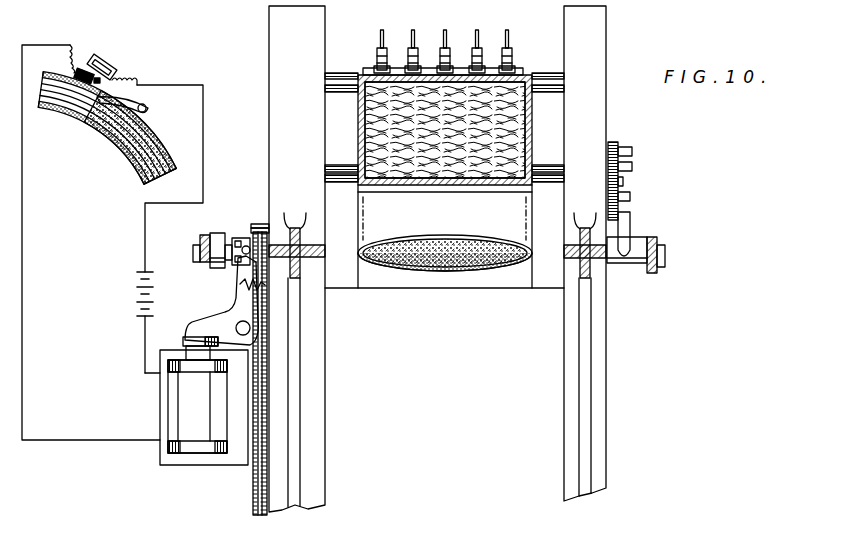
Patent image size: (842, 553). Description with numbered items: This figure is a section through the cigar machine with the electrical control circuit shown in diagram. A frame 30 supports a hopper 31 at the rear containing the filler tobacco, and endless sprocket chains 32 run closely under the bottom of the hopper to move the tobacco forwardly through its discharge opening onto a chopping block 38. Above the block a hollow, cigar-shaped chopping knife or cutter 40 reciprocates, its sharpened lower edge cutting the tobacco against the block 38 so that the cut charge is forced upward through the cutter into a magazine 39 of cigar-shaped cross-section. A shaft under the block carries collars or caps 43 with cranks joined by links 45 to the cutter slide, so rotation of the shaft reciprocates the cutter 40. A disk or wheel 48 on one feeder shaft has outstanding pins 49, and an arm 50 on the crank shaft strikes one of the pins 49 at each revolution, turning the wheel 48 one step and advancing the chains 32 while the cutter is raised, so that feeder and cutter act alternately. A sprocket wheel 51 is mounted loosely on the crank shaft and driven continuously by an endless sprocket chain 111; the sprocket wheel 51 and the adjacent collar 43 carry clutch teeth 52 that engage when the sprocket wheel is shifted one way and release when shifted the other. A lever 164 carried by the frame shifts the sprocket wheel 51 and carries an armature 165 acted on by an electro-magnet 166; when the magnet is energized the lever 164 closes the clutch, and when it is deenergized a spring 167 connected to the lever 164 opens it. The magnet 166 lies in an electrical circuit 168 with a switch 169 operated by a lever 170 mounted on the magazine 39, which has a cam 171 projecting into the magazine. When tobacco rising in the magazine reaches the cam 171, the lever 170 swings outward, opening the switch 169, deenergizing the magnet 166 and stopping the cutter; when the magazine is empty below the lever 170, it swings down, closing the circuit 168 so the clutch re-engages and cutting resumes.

The frame 30 is at (564, 357).
The hopper 31 is at (533, 130).
The endless sprocket chains 32 is at (480, 53).
The chopping block 38 is at (474, 288).
The magazine 39 is at (168, 152).
The chopping knife or cutter 40 is at (466, 240).
The collars or caps 43 is at (218, 272).
The links 45 is at (658, 243).
The disk or wheel 48 is at (622, 182).
The outstanding pins 49 is at (633, 150).
The arm 50 is at (632, 226).
The sprocket wheel 51 is at (253, 230).
The clutch teeth 52 is at (237, 240).
The endless sprocket chain 111 is at (253, 492).
The lever 164 is at (236, 304).
The armature 165 is at (185, 338).
The electro-magnet 166 is at (178, 403).
The spring 167 is at (265, 285).
The electrical circuit 168 is at (22, 331).
The switch 169 is at (88, 58).
The lever 170 is at (118, 76).
The cam 171 is at (150, 106).